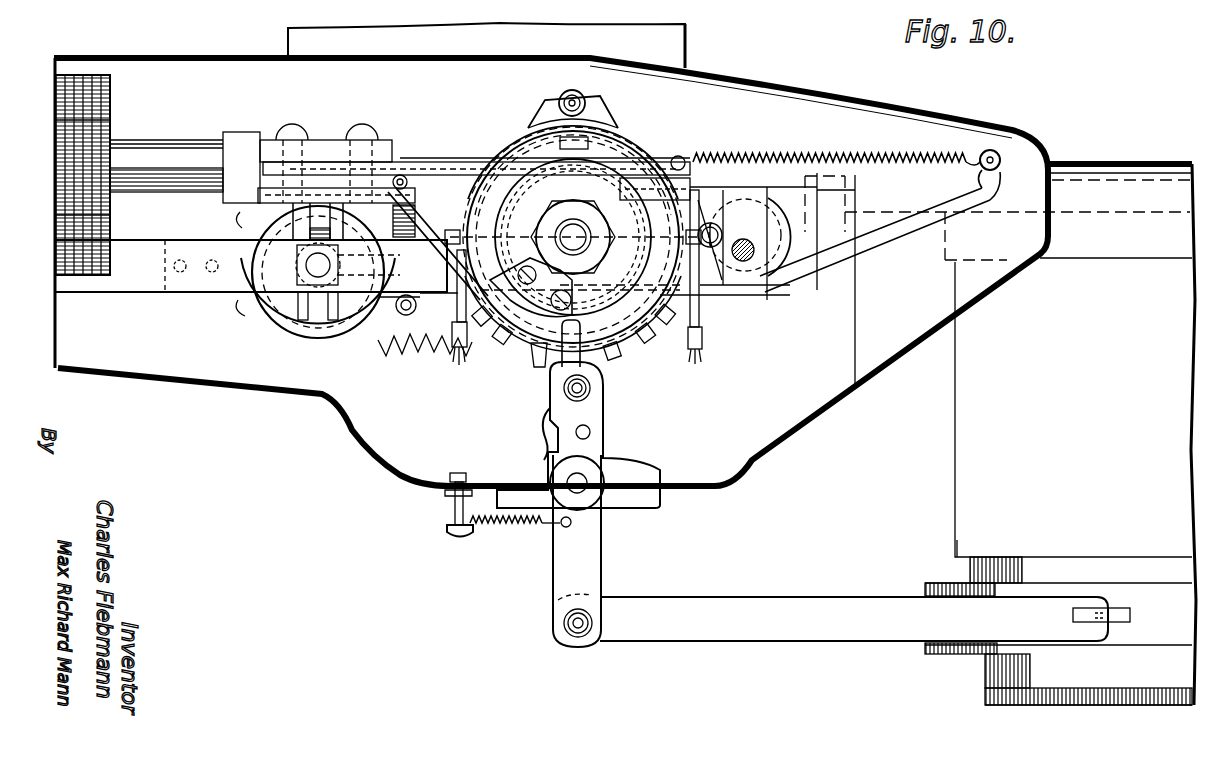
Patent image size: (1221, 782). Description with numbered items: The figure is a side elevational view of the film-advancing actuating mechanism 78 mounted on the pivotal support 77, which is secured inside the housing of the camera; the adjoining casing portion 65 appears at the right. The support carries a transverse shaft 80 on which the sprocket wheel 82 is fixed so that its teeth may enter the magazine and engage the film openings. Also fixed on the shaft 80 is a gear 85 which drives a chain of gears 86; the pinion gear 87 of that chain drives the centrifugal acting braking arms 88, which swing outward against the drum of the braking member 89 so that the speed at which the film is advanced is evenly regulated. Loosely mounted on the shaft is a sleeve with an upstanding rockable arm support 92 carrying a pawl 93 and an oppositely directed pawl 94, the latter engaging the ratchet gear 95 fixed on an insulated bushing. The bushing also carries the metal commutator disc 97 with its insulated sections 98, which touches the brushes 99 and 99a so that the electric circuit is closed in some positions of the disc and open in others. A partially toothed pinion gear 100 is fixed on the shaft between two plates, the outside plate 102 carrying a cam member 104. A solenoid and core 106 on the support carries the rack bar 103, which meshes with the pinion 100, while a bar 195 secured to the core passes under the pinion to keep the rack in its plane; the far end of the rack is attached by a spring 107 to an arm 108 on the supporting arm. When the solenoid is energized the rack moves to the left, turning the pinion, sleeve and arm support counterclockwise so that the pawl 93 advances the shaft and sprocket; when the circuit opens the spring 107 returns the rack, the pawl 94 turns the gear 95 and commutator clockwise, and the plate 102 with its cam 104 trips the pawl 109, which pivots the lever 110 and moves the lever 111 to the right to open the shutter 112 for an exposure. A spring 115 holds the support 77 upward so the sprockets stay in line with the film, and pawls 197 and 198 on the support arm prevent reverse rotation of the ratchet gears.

The casing box 65 is at (1000, 434).
The support 77 is at (150, 293).
The actuating mechanism 78 is at (763, 331).
The transverse shaft 80 is at (575, 239).
The sprocket wheel 82 is at (548, 370).
The gear 85 is at (620, 172).
The chain of gears 86 is at (414, 357).
The pinion gear 87 is at (295, 265).
The centrifugal acting braking arms 88 is at (318, 228).
The braking member 89 is at (272, 330).
The rockable arm support 92 is at (610, 148).
The pawl 93 is at (540, 120).
The pawl 94 is at (600, 130).
The ratchet gear 95 is at (522, 150).
The metal commutator disc 97 is at (505, 156).
The insulated sections 98 is at (583, 128).
The brush 99 is at (454, 362).
The brush 99a is at (702, 347).
The pinion gear 100 is at (660, 172).
The outside plate 102 is at (640, 335).
The rack bar 103 is at (702, 176).
The cam member 104 is at (530, 350).
The solenoid and core 106 is at (131, 135).
The spring 107 is at (850, 158).
The arm 108 is at (890, 228).
The pawl 109 is at (603, 390).
The lever 110 is at (590, 560).
The lever 111 is at (764, 597).
The shutter 112 is at (1130, 615).
The spring 115 is at (415, 198).
The bar 195 is at (400, 238).
The pawl 197 is at (728, 270).
The pawl 198 is at (760, 182).